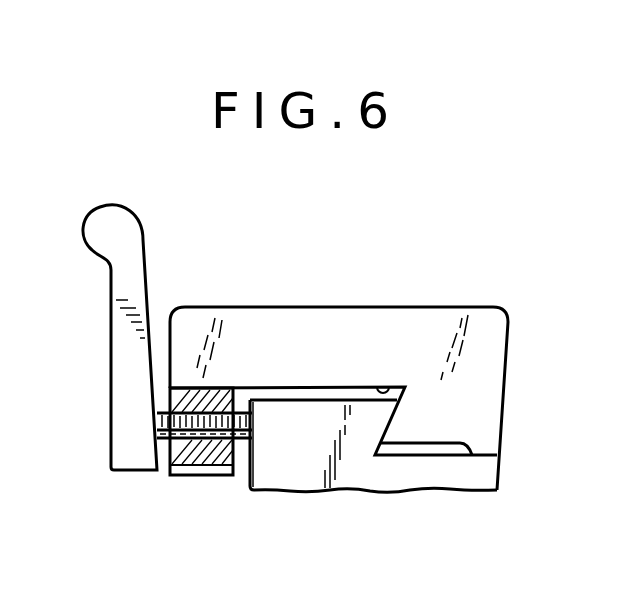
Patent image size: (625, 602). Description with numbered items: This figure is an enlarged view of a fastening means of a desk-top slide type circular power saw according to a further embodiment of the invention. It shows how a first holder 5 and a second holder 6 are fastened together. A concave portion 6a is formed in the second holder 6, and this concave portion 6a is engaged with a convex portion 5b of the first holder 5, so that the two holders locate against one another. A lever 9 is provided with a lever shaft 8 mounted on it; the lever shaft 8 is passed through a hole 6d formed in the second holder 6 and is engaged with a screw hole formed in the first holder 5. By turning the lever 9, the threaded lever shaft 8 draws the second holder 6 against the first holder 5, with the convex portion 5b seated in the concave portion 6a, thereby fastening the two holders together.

The first holder 5 is at (357, 483).
The convex portion 5b is at (288, 437).
The second holder 6 is at (483, 352).
The concave portion 6a is at (393, 386).
The hole 6d is at (203, 390).
The lever shaft 8 is at (203, 390).
The lever 9 is at (120, 352).